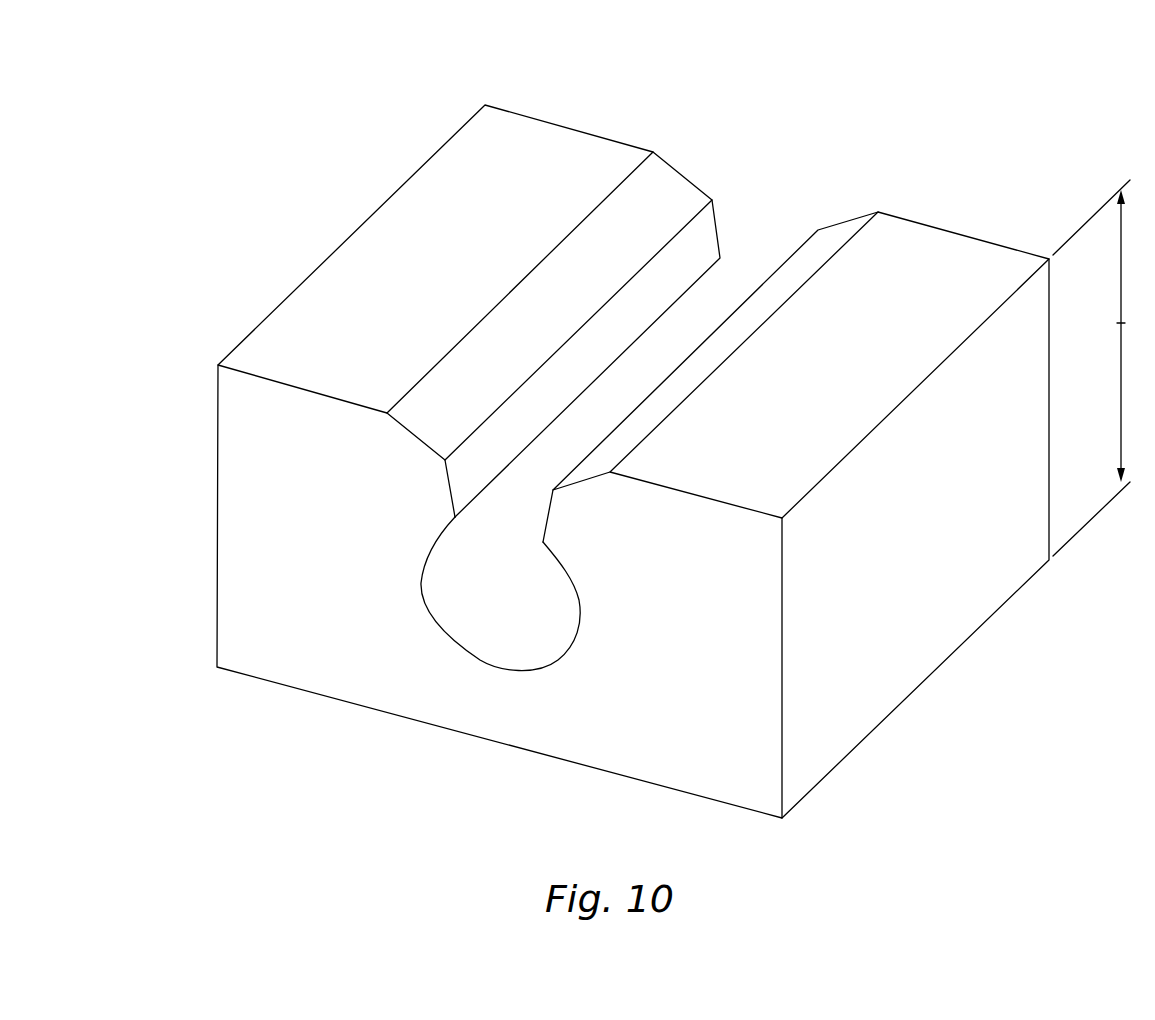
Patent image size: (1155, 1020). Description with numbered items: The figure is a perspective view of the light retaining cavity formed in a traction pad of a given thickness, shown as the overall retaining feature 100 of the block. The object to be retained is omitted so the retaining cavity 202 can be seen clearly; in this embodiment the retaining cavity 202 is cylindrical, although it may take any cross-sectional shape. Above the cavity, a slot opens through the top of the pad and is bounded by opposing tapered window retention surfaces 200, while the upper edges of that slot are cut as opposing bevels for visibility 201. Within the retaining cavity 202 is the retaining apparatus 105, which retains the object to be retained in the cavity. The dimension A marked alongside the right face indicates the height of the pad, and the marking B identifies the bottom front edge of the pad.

The block assembly 100 is at (348, 162).
The retaining apparatus 105 is at (420, 651).
The opposing tapered window retention surfaces 200 is at (697, 347).
The opposing bevels for visibility 201 is at (673, 180).
The retaining cavity 202 is at (488, 630).
The height dimension A is at (978, 268).
The bottom edge B is at (525, 750).